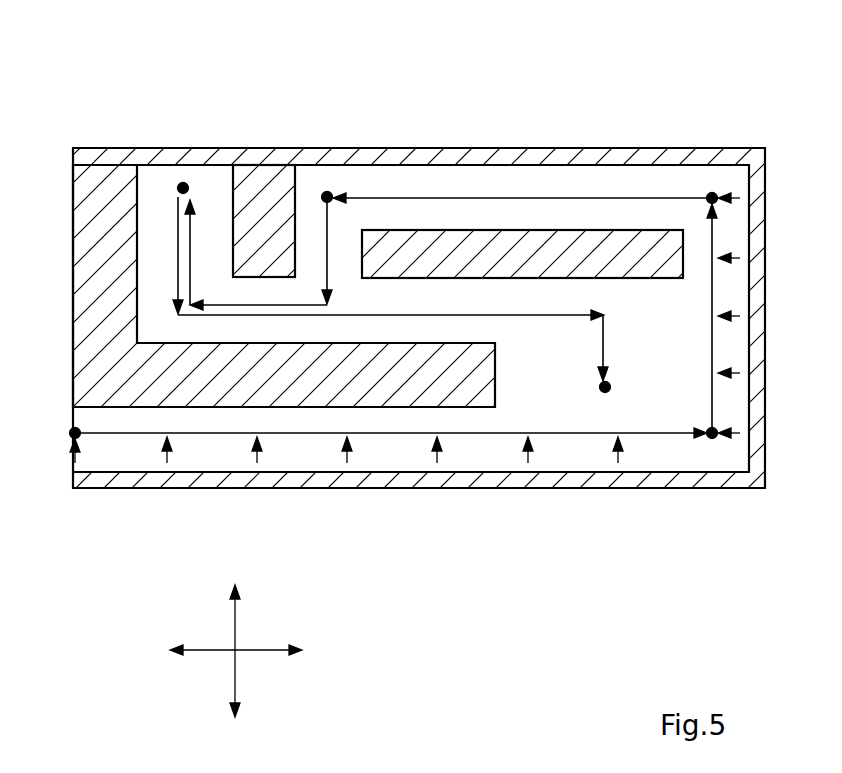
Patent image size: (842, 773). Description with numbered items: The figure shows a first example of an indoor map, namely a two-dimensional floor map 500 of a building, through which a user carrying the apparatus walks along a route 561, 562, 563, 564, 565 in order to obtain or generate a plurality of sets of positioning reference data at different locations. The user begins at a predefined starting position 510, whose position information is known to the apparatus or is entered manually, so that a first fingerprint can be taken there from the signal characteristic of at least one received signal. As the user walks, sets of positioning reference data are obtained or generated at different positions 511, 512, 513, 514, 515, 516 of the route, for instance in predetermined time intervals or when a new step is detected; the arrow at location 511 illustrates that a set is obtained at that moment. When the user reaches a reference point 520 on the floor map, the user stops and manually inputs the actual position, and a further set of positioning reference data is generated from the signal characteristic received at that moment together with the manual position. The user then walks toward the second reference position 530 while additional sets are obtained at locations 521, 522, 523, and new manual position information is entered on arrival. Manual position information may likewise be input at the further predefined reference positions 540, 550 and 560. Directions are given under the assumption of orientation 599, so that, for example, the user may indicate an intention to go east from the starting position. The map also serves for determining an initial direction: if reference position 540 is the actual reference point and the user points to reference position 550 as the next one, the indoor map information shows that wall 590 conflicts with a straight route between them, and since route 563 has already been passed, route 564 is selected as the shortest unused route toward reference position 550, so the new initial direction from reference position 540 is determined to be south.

The floor map 500 is at (651, 98).
The starting position 510 is at (72, 437).
The location 511 is at (167, 455).
The position 512 is at (257, 455).
The position 513 is at (347, 455).
The position 514 is at (437, 455).
The position 515 is at (528, 455).
The position 516 is at (618, 455).
The reference point 520 is at (713, 438).
The location 521 is at (733, 373).
The location 522 is at (733, 316).
The location 523 is at (733, 258).
The second reference position 530 is at (714, 195).
The reference position 540 is at (332, 196).
The reference position 550 is at (181, 185).
The reference position 560 is at (610, 385).
The route 561 is at (126, 435).
The route 562 is at (713, 398).
The route 563 is at (557, 197).
The route 564 is at (302, 303).
The route 565 is at (548, 316).
The wall 590 is at (262, 188).
The orientation 599 is at (235, 675).